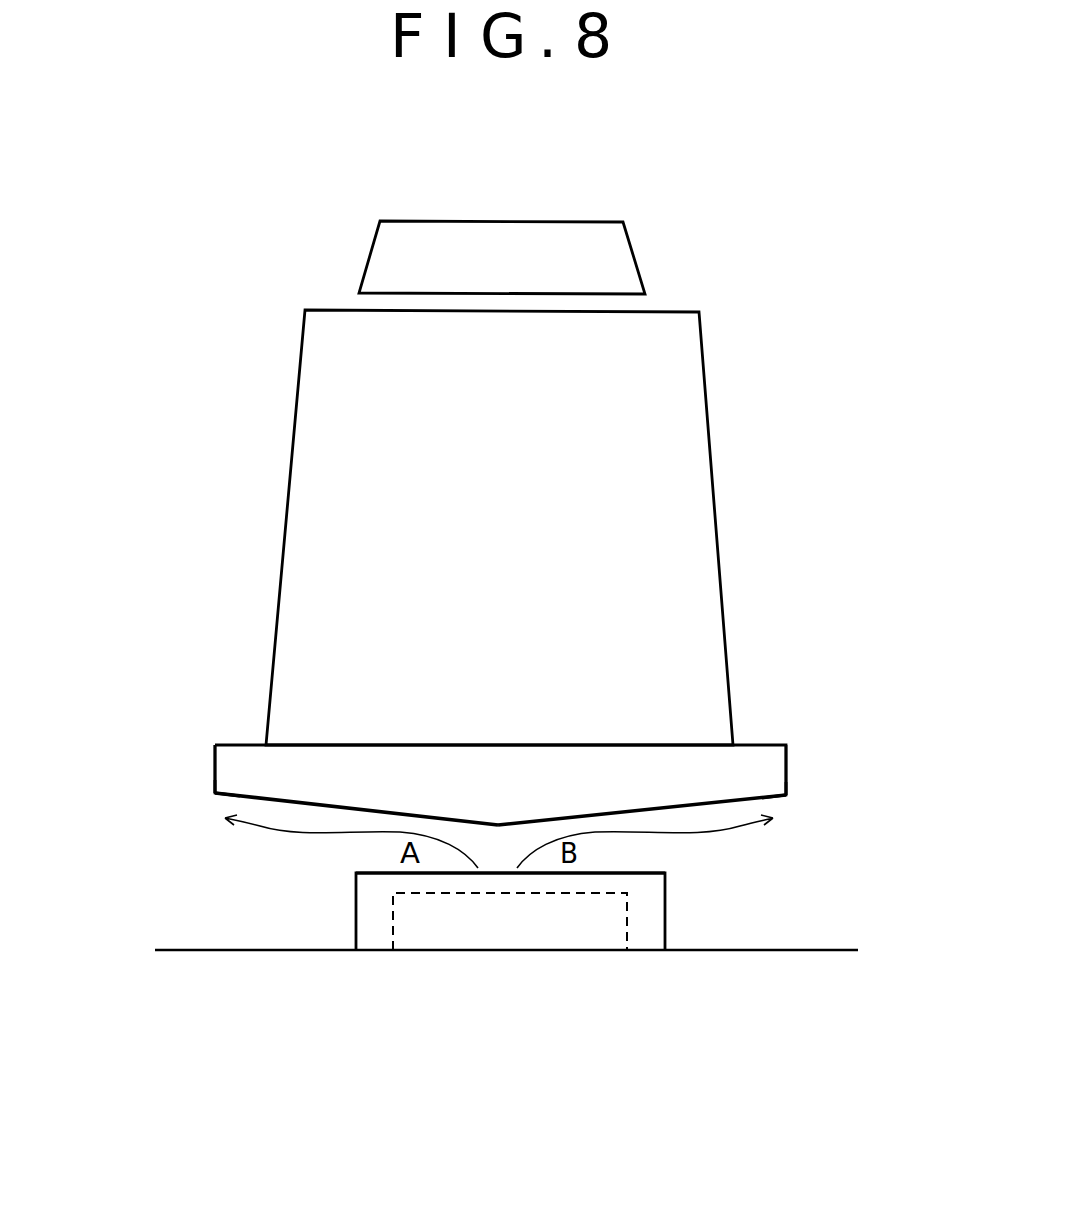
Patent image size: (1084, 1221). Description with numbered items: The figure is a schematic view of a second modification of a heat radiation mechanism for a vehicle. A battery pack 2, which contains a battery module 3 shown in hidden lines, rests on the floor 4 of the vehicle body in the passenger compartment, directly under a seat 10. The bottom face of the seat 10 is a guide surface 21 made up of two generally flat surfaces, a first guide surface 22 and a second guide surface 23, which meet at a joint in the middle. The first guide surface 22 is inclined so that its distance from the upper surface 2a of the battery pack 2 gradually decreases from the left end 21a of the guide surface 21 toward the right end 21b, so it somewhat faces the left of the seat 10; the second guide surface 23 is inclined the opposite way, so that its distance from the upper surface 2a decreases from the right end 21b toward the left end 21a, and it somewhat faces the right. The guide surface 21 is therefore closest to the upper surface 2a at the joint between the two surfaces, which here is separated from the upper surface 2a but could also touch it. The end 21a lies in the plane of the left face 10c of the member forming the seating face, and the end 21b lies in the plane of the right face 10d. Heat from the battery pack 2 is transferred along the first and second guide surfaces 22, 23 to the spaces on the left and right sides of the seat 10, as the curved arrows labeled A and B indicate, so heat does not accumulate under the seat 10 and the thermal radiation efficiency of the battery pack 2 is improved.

The seat 10 is at (687, 467).
The left face 10c is at (215, 760).
The right face 10d is at (787, 772).
The guide surface 21 is at (827, 592).
The first guide surface 22 is at (433, 815).
The second guide surface 23 is at (595, 813).
The end of guide surface 21a is at (201, 804).
The end of guide surface 21b is at (797, 813).
The battery pack 2 is at (356, 902).
The upper surface 2a is at (627, 873).
The battery module 3 is at (627, 917).
The floor 4 is at (723, 952).